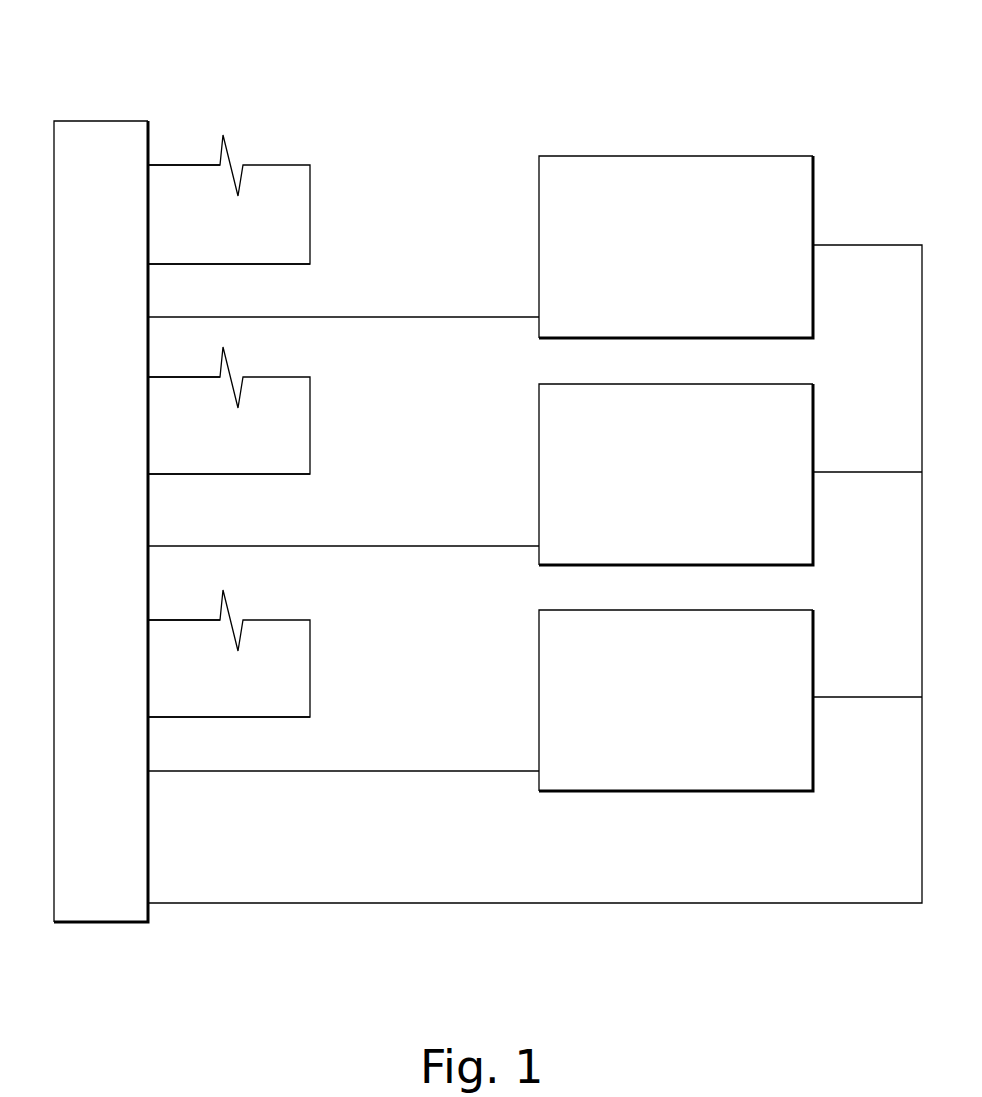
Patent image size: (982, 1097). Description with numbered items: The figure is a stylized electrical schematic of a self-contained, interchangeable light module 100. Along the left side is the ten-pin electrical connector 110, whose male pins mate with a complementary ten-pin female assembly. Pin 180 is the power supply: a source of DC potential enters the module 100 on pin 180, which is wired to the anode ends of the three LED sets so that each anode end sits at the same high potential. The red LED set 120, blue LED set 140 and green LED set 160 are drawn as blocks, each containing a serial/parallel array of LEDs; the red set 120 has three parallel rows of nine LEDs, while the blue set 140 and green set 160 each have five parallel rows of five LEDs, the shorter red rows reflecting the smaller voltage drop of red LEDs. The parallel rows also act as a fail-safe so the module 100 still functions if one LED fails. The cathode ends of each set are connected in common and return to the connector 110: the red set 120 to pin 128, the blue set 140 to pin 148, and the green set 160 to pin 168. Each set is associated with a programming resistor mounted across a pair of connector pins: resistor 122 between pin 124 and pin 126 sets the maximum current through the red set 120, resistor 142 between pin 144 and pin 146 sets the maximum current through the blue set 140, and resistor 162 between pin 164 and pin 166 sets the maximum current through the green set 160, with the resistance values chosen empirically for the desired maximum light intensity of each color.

The light module 100 is at (735, 67).
The ten-pin electrical connector 110 is at (101, 521).
The red LED set 120 is at (838, 182).
The programming resistor 122 is at (226, 147).
The pin 124 is at (148, 165).
The pin 126 is at (148, 264).
The pin 128 is at (148, 317).
The blue LED set 140 is at (816, 396).
The programming resistor 142 is at (248, 350).
The pin 144 is at (148, 377).
The pin 146 is at (148, 474).
The pin 148 is at (148, 546).
The green LED set 160 is at (816, 628).
The programming resistor 162 is at (250, 595).
The pin 164 is at (148, 620).
The pin 166 is at (148, 717).
The pin 168 is at (148, 771).
The power supply pin 180 is at (148, 903).